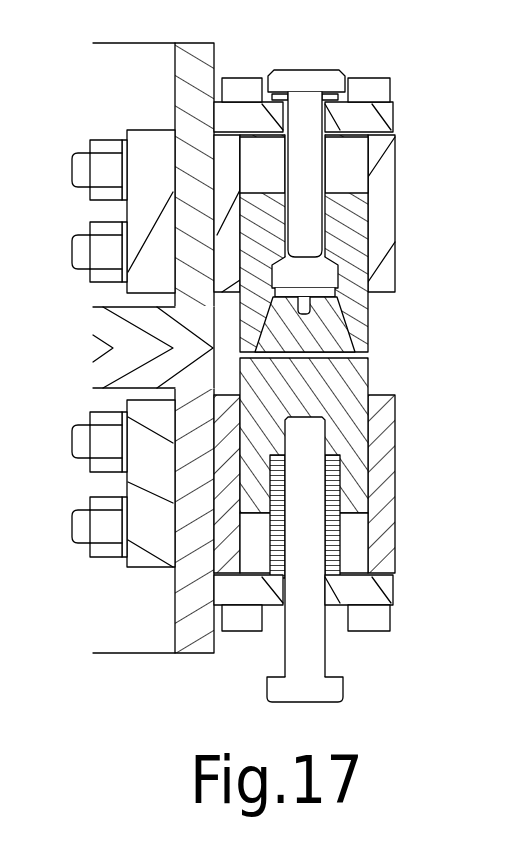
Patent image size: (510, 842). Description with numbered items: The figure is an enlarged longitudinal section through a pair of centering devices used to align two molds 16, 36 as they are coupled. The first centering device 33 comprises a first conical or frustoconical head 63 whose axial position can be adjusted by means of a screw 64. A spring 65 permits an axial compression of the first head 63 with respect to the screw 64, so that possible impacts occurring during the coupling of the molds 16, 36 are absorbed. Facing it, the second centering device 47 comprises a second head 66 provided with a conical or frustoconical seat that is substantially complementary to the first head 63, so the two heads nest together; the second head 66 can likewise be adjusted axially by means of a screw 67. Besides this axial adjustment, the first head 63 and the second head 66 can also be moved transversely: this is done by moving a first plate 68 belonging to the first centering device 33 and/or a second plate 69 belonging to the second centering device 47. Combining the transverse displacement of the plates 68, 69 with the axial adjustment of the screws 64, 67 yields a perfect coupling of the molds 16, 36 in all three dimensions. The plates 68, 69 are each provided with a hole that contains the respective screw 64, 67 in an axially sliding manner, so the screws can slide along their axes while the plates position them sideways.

The mold 16 is at (194, 48).
The mold 36 is at (192, 650).
The second centering device 47 is at (384, 201).
The screw 67 is at (306, 70).
The second plate 69 is at (383, 116).
The second head 66 is at (352, 303).
The first head 63 is at (366, 358).
The first centering device 33 is at (386, 502).
The spring 65 is at (342, 545).
The screw 64 is at (322, 690).
The first plate 68 is at (385, 604).